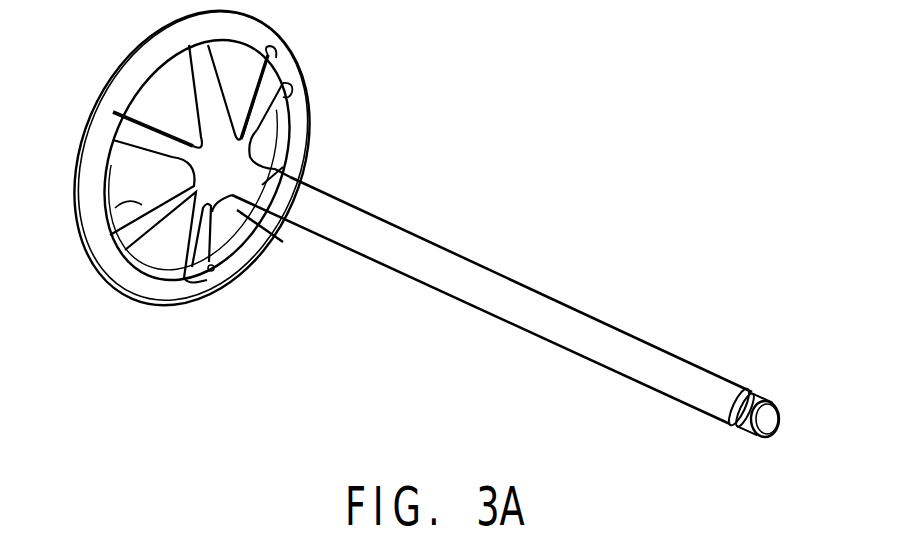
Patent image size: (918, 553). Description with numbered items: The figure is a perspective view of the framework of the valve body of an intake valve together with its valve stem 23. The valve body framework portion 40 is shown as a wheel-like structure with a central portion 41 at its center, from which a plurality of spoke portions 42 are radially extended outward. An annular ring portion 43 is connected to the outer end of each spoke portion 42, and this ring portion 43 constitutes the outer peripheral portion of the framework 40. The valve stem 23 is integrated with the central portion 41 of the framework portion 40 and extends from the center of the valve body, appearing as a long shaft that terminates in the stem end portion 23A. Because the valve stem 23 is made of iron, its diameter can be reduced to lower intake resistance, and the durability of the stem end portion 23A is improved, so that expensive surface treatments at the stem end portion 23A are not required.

The valve body framework portion 40 is at (230, 171).
The central portion 41 is at (318, 157).
The spoke portion 42 is at (150, 126).
The annular ring portion 43 is at (263, 32).
The valve stem 23 is at (410, 247).
The stem end portion 23A is at (773, 418).